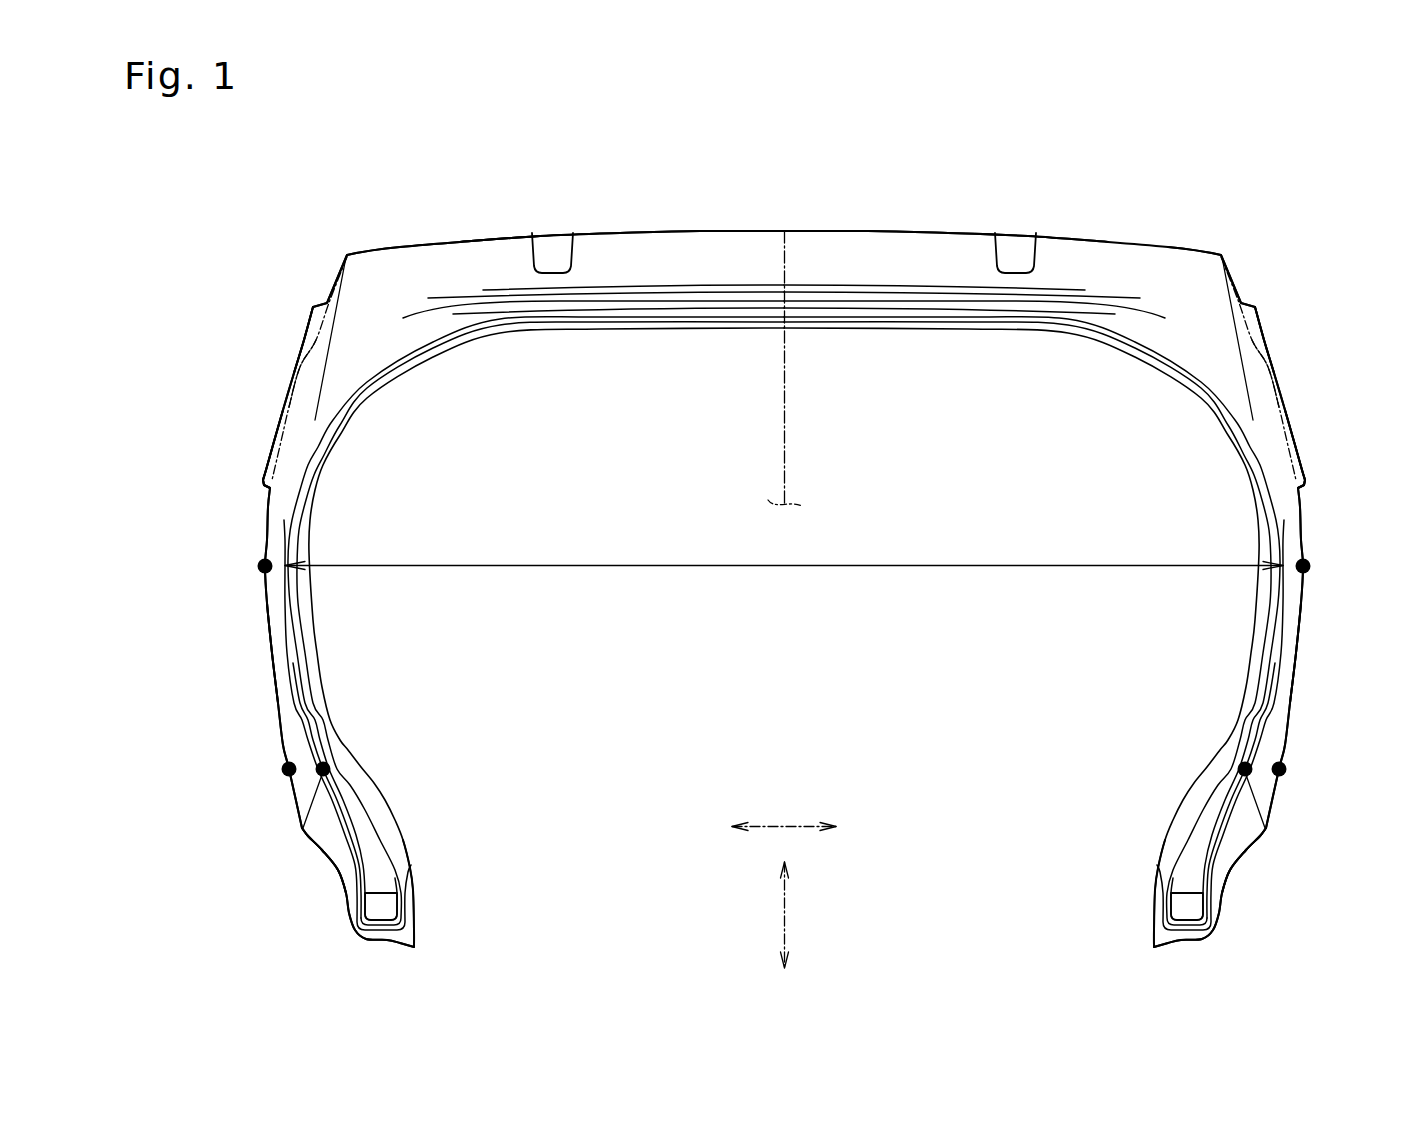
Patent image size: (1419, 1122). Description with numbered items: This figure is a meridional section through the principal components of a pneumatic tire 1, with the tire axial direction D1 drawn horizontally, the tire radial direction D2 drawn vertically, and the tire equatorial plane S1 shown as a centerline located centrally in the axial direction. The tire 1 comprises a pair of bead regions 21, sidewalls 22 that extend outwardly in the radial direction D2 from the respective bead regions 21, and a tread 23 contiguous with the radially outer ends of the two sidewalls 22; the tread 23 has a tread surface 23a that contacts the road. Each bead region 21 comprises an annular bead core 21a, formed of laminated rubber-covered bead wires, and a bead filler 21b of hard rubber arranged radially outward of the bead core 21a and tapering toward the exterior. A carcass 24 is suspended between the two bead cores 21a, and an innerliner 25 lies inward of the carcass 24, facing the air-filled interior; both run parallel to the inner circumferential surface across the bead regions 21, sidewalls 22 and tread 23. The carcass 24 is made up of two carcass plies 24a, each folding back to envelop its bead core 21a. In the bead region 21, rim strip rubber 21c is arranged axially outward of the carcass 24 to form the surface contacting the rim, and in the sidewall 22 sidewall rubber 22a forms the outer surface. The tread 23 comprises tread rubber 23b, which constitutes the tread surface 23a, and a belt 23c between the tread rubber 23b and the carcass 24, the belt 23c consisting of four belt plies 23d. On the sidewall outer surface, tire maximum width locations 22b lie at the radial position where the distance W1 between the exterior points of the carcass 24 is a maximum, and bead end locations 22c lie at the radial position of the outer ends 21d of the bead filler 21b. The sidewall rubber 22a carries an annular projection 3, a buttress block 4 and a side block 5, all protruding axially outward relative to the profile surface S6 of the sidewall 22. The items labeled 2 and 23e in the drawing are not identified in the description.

The tire 1 is at (1322, 150).
The shoulder portion 2 is at (393, 250).
The annular projection 3 is at (295, 367).
The buttress block 4 is at (305, 328).
The side block 5 is at (275, 440).
The bead region 21 is at (302, 922).
The bead core 21a is at (385, 905).
The bead filler 21b is at (370, 850).
The rim strip rubber 21c is at (340, 857).
The outer end of bead filler 21d is at (325, 769).
The sidewall 22 is at (237, 495).
The sidewall rubber 22a is at (275, 640).
The tire maximum width location 22b is at (265, 566).
The bead end location 22c is at (289, 769).
The tread 23 is at (863, 203).
The tread surface 23a is at (465, 231).
The tread rubber 23b is at (735, 240).
The belt 23c is at (935, 290).
The belt ply 23d is at (970, 303).
The main groove 23e is at (557, 233).
The carcass 24 is at (641, 317).
The carcass ply 24a is at (380, 372).
The innerliner 25 is at (855, 330).
The tire equatorial plane S1 is at (784, 468).
The profile surface of sidewall S6 is at (288, 393).
The distance between exterior points of carcass W1 is at (784, 577).
The tire axial direction D1 is at (784, 816).
The tire radial direction D2 is at (800, 915).